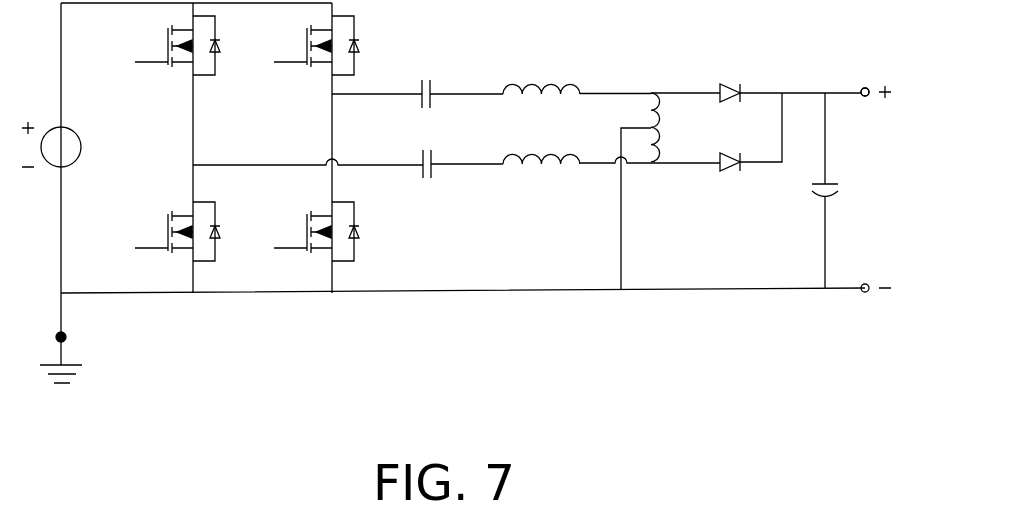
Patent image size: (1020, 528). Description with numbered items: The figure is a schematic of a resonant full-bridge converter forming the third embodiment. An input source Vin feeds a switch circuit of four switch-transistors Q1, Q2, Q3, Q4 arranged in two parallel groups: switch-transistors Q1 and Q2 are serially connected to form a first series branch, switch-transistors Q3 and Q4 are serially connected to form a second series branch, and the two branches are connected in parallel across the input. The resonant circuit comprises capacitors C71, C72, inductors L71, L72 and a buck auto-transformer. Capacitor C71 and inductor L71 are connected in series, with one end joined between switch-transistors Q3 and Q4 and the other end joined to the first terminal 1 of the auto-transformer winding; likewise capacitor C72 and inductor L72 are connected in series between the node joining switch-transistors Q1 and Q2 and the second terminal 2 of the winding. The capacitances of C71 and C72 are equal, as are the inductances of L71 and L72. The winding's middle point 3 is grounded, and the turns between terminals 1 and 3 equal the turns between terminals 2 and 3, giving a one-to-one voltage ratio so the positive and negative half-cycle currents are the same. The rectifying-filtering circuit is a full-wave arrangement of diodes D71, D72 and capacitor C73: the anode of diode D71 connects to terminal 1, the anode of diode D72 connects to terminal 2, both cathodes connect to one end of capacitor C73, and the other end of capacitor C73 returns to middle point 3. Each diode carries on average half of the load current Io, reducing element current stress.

The input voltage source Vin is at (70, 144).
The switch-transistor Q1 is at (193, 45).
The switch-transistor Q2 is at (195, 231).
The switch-transistor Q3 is at (334, 45).
The switch-transistor Q4 is at (334, 231).
The capacitor C71 is at (441, 74).
The capacitor C72 is at (445, 182).
The inductor L71 is at (541, 67).
The inductor L72 is at (541, 179).
The first terminal 1 is at (651, 93).
The second terminal 2 is at (651, 163).
The middle point (third terminal) 3 is at (636, 128).
The diode D71 is at (731, 72).
The diode D72 is at (733, 183).
The capacitor C73 is at (852, 232).
The load current Io is at (864, 68).